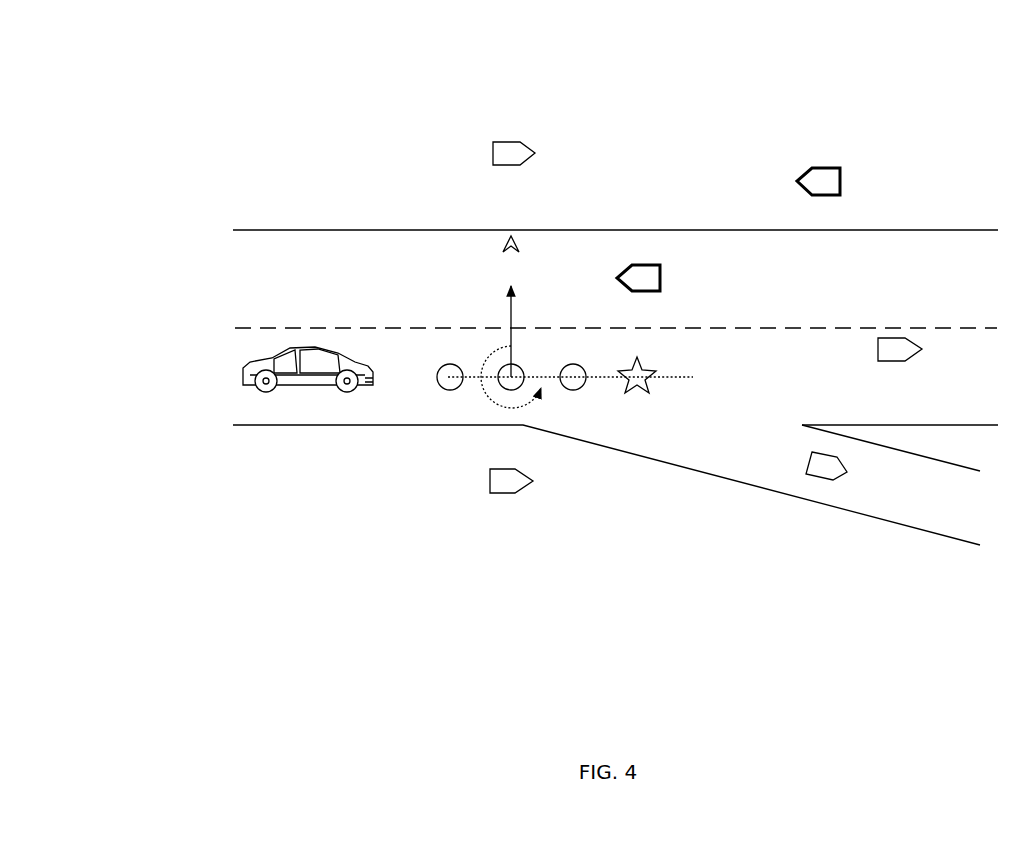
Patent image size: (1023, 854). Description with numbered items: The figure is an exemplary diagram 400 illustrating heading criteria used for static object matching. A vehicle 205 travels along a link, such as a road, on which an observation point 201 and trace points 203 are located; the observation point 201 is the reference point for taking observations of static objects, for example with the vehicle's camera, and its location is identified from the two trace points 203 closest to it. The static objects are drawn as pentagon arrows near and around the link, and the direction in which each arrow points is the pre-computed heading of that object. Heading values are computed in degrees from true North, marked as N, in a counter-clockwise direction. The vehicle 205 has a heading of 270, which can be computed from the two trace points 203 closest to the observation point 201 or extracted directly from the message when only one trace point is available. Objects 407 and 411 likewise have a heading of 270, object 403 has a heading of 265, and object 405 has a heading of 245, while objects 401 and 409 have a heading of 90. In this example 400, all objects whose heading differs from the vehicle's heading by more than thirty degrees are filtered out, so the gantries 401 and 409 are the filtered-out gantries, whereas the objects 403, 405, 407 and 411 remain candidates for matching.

The diagram 400 is at (258, 57).
The observation point 201 is at (660, 365).
The trace points 203 is at (563, 325).
The vehicle 205 is at (240, 358).
The heading of 270 degrees 270 is at (525, 320).
The heading of 90 degrees 90 is at (775, 221).
The heading of 265 degrees 265 is at (940, 362).
The heading of 245 degrees 245 is at (805, 461).
The object 401 is at (668, 276).
The object 403 is at (925, 353).
The object 405 is at (808, 462).
The object 407 is at (535, 494).
The object 409 is at (847, 176).
The object 411 is at (530, 142).